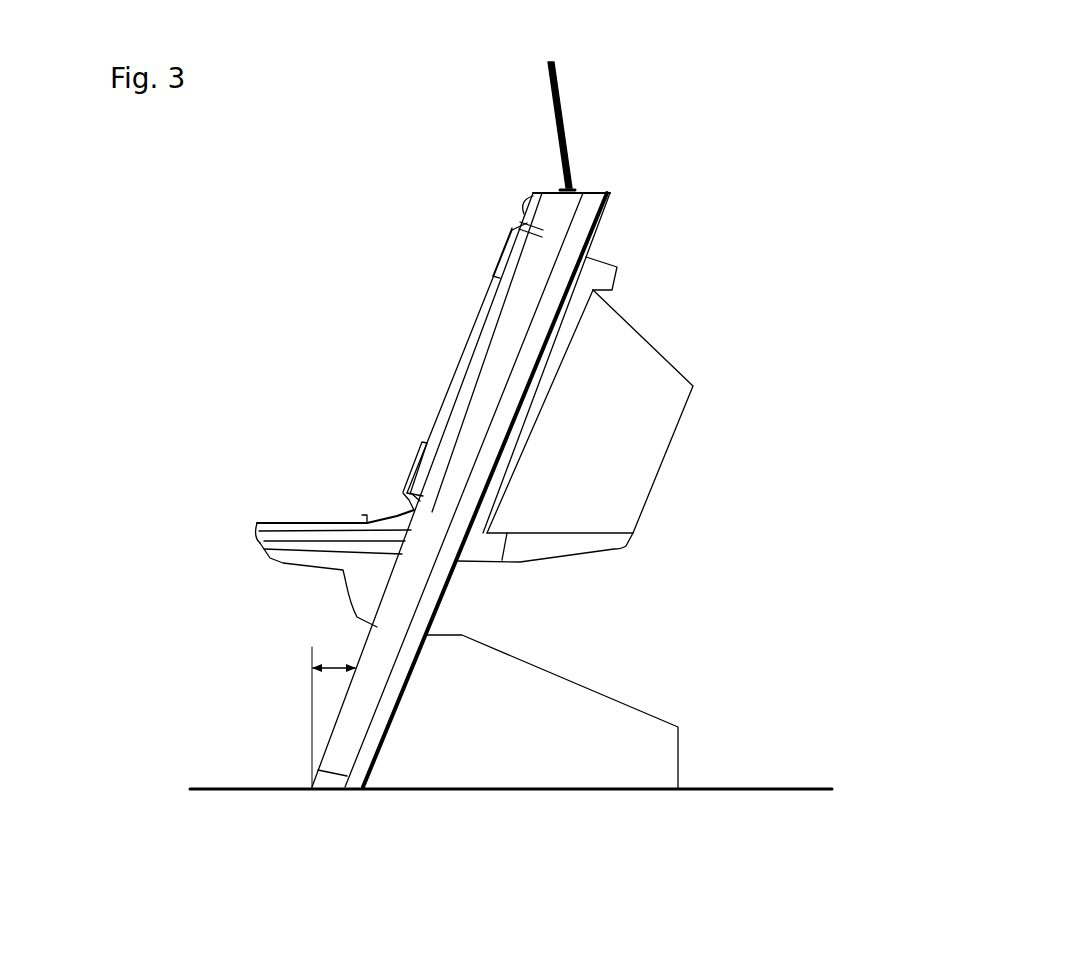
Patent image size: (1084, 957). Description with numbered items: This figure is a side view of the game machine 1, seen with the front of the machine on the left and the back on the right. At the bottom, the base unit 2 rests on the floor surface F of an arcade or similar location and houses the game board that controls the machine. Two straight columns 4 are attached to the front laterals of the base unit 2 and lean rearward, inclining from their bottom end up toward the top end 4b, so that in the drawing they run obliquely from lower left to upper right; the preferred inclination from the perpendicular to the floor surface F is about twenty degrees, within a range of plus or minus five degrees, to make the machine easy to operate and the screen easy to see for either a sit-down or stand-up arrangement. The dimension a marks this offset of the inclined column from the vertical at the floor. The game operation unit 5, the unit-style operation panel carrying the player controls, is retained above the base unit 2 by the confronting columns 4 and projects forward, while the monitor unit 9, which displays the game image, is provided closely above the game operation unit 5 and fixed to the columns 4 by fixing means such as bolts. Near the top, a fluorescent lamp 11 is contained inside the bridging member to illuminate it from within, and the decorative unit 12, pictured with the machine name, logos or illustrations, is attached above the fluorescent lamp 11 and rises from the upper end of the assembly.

The game machine 1 is at (414, 240).
The base unit 2 is at (572, 700).
The columns 4 is at (578, 200).
The top end 4b is at (605, 191).
The game operation unit 5 is at (271, 522).
The monitor unit 9 is at (460, 362).
The fluorescent lamp 11 is at (527, 202).
The decorative unit 12 is at (557, 93).
The offset distance a is at (334, 713).
The floor surface F is at (756, 789).